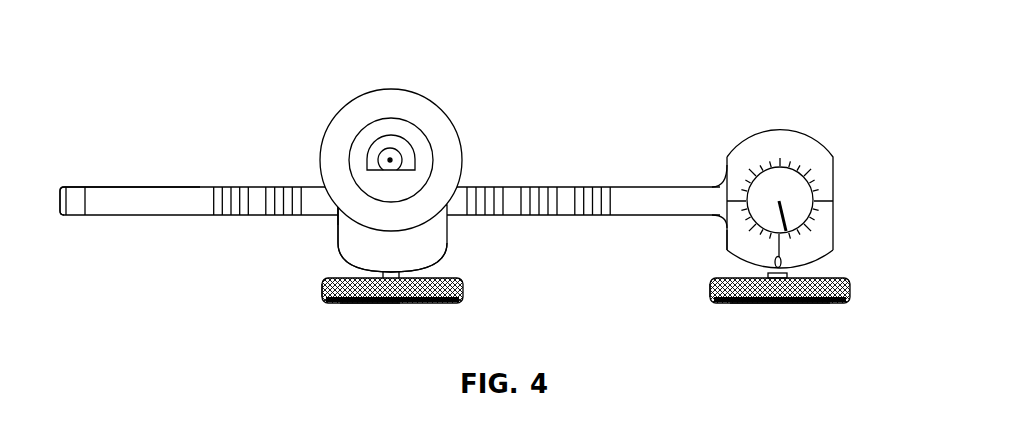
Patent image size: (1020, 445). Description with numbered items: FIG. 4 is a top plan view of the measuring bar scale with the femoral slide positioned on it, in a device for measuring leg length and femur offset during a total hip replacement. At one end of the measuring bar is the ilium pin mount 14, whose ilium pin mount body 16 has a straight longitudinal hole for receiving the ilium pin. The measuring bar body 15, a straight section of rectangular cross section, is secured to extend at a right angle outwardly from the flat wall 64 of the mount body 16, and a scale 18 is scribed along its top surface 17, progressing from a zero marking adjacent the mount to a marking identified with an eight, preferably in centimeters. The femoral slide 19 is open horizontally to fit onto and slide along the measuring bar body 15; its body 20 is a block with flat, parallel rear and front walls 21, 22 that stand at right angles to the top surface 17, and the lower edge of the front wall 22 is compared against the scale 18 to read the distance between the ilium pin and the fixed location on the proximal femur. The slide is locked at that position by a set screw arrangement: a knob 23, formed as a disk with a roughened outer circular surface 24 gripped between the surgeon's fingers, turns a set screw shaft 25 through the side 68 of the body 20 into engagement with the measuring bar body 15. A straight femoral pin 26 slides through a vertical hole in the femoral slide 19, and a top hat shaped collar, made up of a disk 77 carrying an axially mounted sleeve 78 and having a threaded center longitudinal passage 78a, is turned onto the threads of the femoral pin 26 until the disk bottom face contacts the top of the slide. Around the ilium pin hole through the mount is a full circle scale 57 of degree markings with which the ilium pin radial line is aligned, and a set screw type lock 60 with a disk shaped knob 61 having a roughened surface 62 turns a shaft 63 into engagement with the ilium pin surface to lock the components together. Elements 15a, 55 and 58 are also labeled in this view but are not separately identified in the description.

The ilium pin mount 14 is at (788, 126).
The measuring bar body 15 is at (642, 193).
The end of ruler 15a is at (62, 197).
The ilium pin mount body 16 is at (727, 250).
The top surface 17 is at (158, 198).
The scale 18 is at (543, 195).
The femoral slide 19 is at (455, 113).
The body 20 is at (365, 243).
The rear wall 21 is at (337, 225).
The front wall 22 is at (448, 233).
The knob 23 is at (367, 303).
The roughened outer circular surface 24 is at (463, 290).
The set screw shaft 25 is at (323, 278).
The femoral pin 26 is at (405, 142).
The gauge face 55 is at (810, 155).
The full circle scale 57 is at (773, 157).
The plunger stem 58 is at (787, 262).
The set screw type lock 60 is at (774, 307).
The disk shaped knob 61 is at (717, 303).
The roughened surface 62 is at (850, 298).
The shaft 63 is at (790, 276).
The flat wall 64 is at (720, 163).
The side 68 is at (435, 258).
The disk 77 is at (355, 110).
The sleeve 78 is at (392, 123).
The threaded center longitudinal passage 78a is at (382, 135).